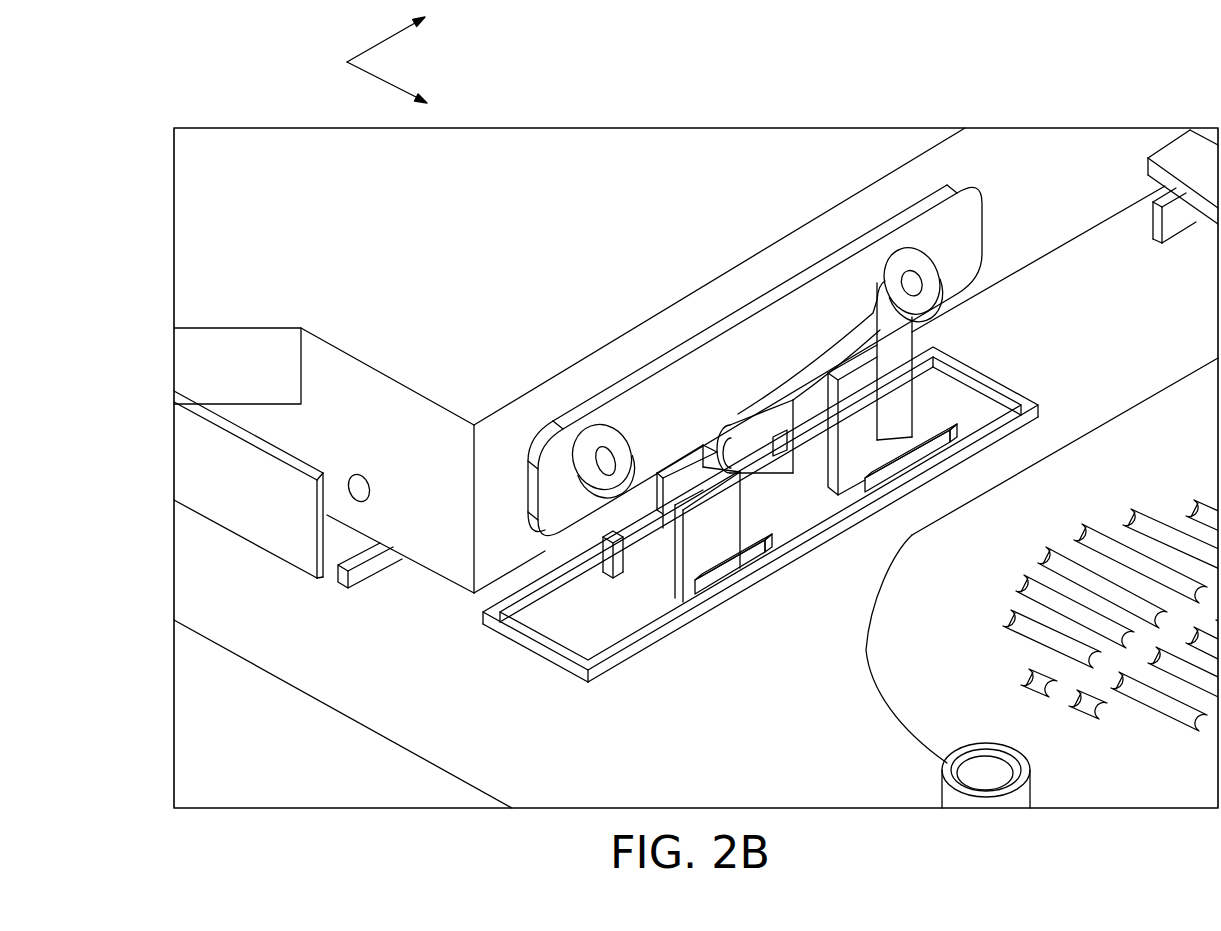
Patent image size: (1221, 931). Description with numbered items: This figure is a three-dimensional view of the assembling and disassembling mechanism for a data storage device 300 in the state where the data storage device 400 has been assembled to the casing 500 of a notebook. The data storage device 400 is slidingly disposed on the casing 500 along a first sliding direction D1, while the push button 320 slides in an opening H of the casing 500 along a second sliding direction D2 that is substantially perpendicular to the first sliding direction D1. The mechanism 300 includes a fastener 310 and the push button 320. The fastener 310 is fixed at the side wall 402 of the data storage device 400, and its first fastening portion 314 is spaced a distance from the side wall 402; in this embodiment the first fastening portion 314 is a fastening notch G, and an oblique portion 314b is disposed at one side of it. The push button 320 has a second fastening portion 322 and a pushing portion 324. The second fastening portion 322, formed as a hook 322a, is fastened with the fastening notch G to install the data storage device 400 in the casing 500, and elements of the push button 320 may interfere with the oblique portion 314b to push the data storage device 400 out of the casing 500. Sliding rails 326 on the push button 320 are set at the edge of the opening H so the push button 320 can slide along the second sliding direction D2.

The assembling and disassembling mechanism for a data storage device 300 is at (1057, 303).
The fastener 310 is at (952, 283).
The first fastening portion 314 is at (814, 370).
The oblique portion 314b is at (815, 402).
The push button 320 is at (967, 413).
The second fastening portion 322 is at (699, 579).
The hook 322a is at (657, 515).
The pushing portion 324 is at (863, 443).
The sliding rails 326 is at (930, 457).
The data storage device 400 is at (245, 188).
The side wall 402 is at (1000, 165).
The casing 500 is at (848, 777).
The fastening notch G is at (784, 441).
The opening H is at (548, 612).
The first sliding direction D1 is at (404, 93).
The second sliding direction D2 is at (404, 33).